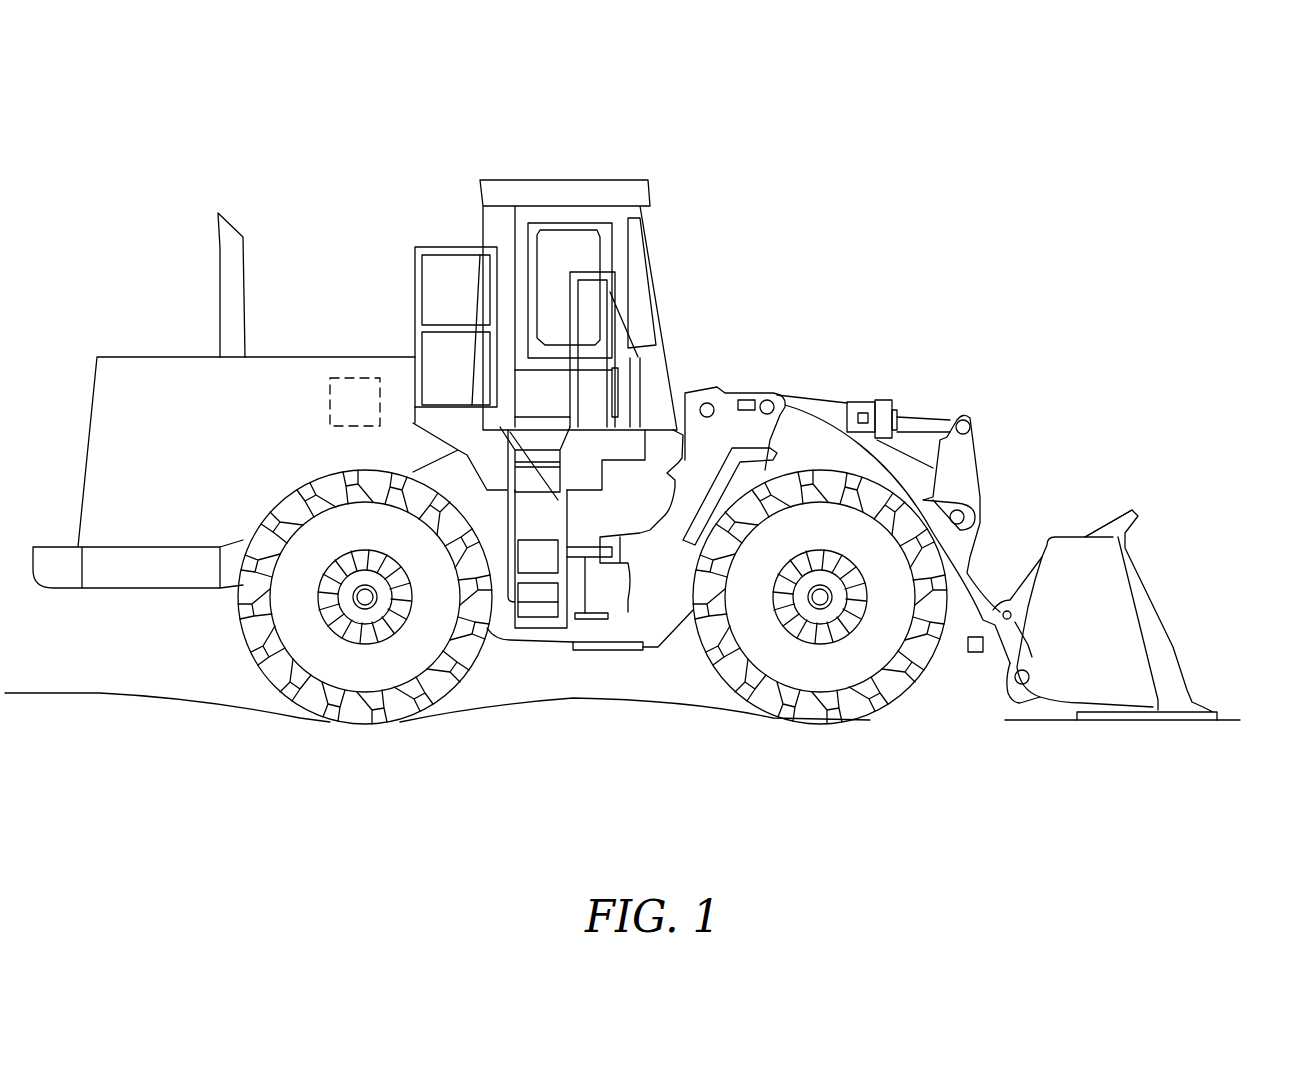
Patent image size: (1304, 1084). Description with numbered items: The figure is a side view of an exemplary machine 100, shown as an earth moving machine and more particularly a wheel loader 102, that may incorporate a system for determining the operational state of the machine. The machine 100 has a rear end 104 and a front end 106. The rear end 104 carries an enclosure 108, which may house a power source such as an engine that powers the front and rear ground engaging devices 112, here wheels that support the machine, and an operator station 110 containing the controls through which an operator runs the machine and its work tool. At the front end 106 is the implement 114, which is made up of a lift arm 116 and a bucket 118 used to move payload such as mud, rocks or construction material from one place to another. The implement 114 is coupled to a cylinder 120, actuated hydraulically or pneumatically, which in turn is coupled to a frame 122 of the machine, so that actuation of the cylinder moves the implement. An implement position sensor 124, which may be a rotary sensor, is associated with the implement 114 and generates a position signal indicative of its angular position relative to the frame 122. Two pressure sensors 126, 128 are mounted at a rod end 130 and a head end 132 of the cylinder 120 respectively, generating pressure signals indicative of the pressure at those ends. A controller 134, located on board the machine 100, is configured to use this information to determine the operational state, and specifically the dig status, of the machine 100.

The machine 100 is at (655, 158).
The wheel loader 102 is at (862, 193).
The rear end 104 is at (122, 160).
The front end 106 is at (1043, 193).
The enclosure 108 is at (92, 407).
The operator station 110 is at (650, 255).
The front and rear ground engaging devices 112 is at (460, 673).
The implement 114 is at (1078, 463).
The lift arm 116 is at (965, 617).
The bucket 118 is at (1130, 548).
The cylinder 120 is at (920, 400).
The frame 122 is at (660, 620).
The implement position sensor 124 is at (975, 652).
The pressure sensor 126 is at (848, 400).
The pressure sensor 128 is at (745, 400).
The rod end 130 is at (885, 394).
The head end 132 is at (757, 394).
The controller 134 is at (353, 377).